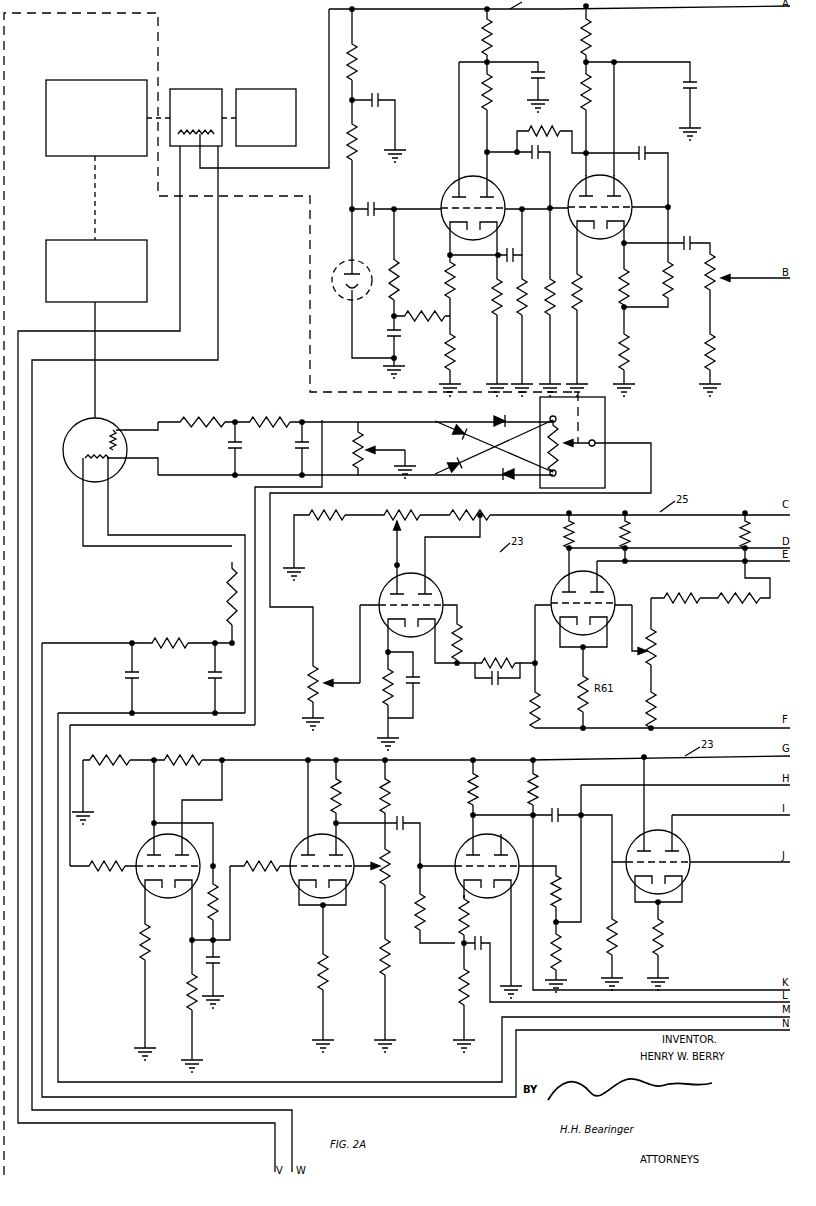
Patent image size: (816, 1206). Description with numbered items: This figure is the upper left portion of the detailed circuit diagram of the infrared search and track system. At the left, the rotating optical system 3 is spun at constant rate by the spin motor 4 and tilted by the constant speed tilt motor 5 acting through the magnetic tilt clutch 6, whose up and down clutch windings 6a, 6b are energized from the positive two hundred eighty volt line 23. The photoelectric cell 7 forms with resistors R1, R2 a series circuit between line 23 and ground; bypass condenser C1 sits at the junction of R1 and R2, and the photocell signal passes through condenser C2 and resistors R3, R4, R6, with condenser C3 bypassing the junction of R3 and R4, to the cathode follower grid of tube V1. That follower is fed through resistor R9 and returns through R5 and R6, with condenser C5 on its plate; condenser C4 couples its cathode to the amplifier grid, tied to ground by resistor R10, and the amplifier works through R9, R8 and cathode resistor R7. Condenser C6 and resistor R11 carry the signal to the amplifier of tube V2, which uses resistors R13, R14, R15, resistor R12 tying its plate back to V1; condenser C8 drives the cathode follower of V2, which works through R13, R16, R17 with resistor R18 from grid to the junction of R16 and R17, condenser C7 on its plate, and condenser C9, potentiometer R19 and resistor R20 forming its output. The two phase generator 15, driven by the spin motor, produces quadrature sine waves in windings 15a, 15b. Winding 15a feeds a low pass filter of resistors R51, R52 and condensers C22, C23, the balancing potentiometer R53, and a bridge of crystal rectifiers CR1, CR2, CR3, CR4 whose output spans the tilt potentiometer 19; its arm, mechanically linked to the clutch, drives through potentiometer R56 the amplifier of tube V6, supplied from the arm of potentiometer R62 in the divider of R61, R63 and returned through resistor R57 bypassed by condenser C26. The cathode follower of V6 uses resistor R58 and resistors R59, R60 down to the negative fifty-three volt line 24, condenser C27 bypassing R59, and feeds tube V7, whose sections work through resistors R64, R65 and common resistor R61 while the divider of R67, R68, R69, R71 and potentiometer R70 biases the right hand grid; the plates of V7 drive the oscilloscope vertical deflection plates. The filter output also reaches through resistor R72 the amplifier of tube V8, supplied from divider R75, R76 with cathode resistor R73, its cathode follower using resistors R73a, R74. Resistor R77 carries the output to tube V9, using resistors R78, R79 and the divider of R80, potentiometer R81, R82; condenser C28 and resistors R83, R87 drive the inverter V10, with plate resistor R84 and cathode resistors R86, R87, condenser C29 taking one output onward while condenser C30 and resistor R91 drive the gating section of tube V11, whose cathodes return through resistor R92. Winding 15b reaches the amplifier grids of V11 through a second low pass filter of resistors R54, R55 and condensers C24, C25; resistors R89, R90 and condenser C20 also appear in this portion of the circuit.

The optical system 3 is at (110, 84).
The spin motor 4 is at (125, 243).
The tilt motor 5 is at (280, 90).
The magnetic tilt clutch 6 is at (200, 109).
The up clutch winding 6a is at (187, 126).
The down clutch winding 6b is at (205, 126).
The photoelectric cell 7 is at (341, 266).
The two phase generator 15 is at (145, 558).
The output winding 15a is at (122, 428).
The output winding 15b is at (80, 462).
The tilt potentiometer 19 is at (608, 416).
The positive 280 volt line 23 is at (245, 170).
The negative 53 volt line 24 is at (680, 726).
The resistor R1 is at (361, 54).
The resistor R2 is at (361, 180).
The resistor R3 is at (402, 266).
The resistor R4 is at (422, 309).
The resistor R5 is at (458, 285).
The resistor R6 is at (455, 363).
The resistor R7 is at (500, 318).
The resistor R8 is at (496, 111).
The resistor R9 is at (496, 39).
The resistor R10 is at (529, 325).
The resistor R11 is at (556, 302).
The resistor R12 is at (551, 136).
The resistor R13 is at (598, 38).
The resistor R14 is at (575, 90).
The resistor R15 is at (585, 317).
The resistor R16 is at (643, 284).
The resistor R17 is at (633, 363).
The resistor R18 is at (660, 257).
The potentiometer R19 is at (747, 290).
The resistor R20 is at (719, 363).
The bypass condenser C1 is at (379, 121).
The condenser C2 is at (396, 204).
The condenser C3 is at (383, 351).
The condenser C4 is at (486, 235).
The condenser C5 is at (510, 87).
The condenser C6 is at (527, 176).
The condenser C7 is at (649, 101).
The condenser C8 is at (627, 170).
The condenser C9 is at (689, 237).
The tube V1 is at (455, 175).
The tube V2 is at (632, 188).
The tube V6 is at (433, 587).
The tube V7 is at (607, 585).
The tube V8 is at (188, 848).
The tube V9 is at (345, 845).
The inverter V10 is at (510, 845).
The tube V11 is at (680, 838).
The crystal rectifier CR1 is at (496, 414).
The crystal rectifier CR2 is at (490, 446).
The crystal rectifier CR3 is at (494, 447).
The crystal rectifier CR4 is at (502, 480).
The resistor R51 is at (201, 415).
The resistor R52 is at (399, 415).
The balancing potentiometer R53 is at (372, 450).
The resistor R54 is at (213, 602).
The resistor R55 is at (137, 635).
The potentiometer R56 is at (319, 667).
The resistor R57 is at (380, 693).
The resistor R58 is at (469, 641).
The resistor R59 is at (485, 652).
The resistor R60 is at (546, 666).
The resistor R61 is at (331, 538).
The potentiometer R62 is at (412, 531).
The resistor R63 is at (607, 535).
The resistor R64 is at (580, 542).
The resistor R65 is at (636, 537).
The resistor R67 is at (756, 555).
The resistor R68 is at (736, 604).
The resistor R69 is at (682, 604).
The potentiometer R70 is at (656, 643).
The resistor R71 is at (663, 708).
The resistor R72 is at (103, 874).
The resistor R73 is at (132, 979).
The resistor R73a is at (176, 985).
The resistor R74 is at (218, 900).
The resistor R75 is at (116, 783).
The resistor R76 is at (475, 754).
The resistor R77 is at (260, 858).
The resistor R78 is at (326, 975).
The resistor R79 is at (347, 786).
The resistor R80 is at (398, 802).
The potentiometer R81 is at (384, 890).
The resistor R82 is at (395, 993).
The resistor R83 is at (435, 916).
The resistor R84 is at (482, 790).
The resistor R86 is at (477, 930).
The resistor R87 is at (462, 980).
The resistor R89 is at (564, 899).
The resistor R90 is at (565, 961).
The resistor R91 is at (620, 938).
The resistor R92 is at (661, 942).
The capacitor C20 is at (224, 974).
The condenser C22 is at (217, 448).
The condenser C23 is at (285, 448).
The condenser C24 is at (113, 678).
The condenser C25 is at (197, 678).
The bypass condenser C26 is at (416, 685).
The bypass condenser C27 is at (497, 682).
The condenser C28 is at (378, 845).
The condenser C29 is at (627, 964).
The condenser C30 is at (572, 829).